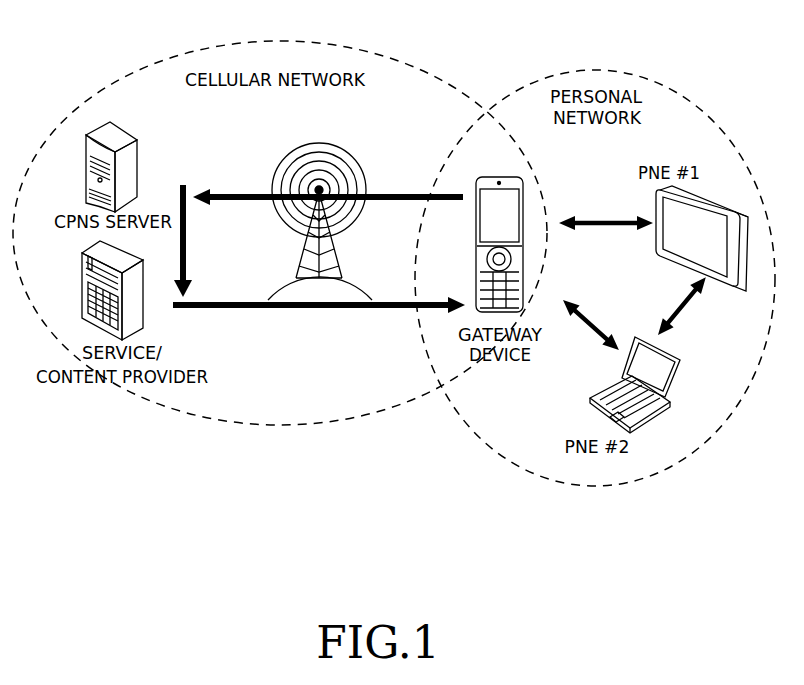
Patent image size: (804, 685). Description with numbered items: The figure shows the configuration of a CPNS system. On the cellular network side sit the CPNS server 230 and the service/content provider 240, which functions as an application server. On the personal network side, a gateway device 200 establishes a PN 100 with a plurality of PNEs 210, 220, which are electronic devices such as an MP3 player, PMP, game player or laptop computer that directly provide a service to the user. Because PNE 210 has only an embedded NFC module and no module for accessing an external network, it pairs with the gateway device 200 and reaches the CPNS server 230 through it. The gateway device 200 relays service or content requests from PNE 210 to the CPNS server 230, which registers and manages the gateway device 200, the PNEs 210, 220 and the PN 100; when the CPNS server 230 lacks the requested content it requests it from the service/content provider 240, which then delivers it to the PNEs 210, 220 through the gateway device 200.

The PN 100 is at (593, 70).
The gateway device 200 is at (497, 176).
The PNE 210 is at (656, 252).
The PNE 220 is at (672, 356).
The CPNS server 230 is at (86, 177).
The service/content provider 240 is at (82, 286).